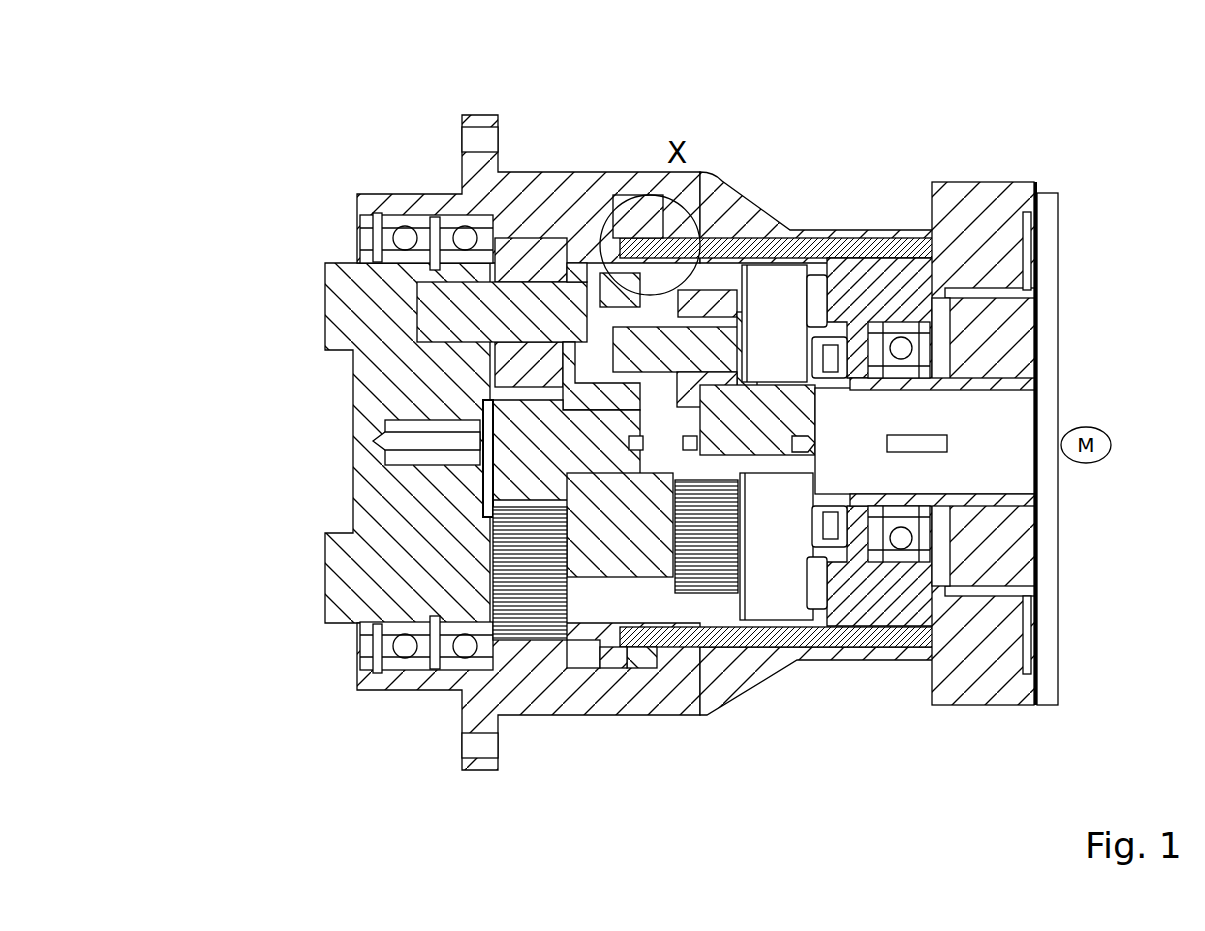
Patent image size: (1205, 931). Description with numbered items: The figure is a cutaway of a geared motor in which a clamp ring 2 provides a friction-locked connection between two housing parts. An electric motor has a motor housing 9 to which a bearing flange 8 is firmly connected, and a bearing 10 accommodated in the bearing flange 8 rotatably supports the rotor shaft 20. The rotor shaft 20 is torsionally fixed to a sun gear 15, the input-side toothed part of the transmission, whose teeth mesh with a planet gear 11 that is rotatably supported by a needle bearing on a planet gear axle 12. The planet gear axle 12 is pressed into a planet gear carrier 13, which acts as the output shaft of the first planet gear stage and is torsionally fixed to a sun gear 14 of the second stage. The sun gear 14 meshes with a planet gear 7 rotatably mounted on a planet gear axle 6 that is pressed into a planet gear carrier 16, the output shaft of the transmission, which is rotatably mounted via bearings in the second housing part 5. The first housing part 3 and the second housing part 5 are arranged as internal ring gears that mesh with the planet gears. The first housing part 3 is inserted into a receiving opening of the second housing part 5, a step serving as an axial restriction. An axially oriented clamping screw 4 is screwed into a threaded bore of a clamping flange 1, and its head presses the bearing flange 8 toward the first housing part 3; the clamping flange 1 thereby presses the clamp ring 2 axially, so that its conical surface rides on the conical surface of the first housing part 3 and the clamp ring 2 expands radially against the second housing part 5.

The clamping flange 1 is at (608, 658).
The clamp ring 2 is at (637, 223).
The first housing part 3 is at (722, 200).
The clamping screw 4 is at (773, 247).
The second housing part 5 is at (574, 194).
The planet gear axle 6 is at (468, 322).
The planet gear 7 is at (530, 255).
The bearing flange 8 is at (871, 284).
The motor housing 9 is at (1002, 212).
The bearing 10 is at (900, 348).
The planet gear 11 is at (710, 302).
The planet gear axle 12 is at (703, 348).
The planet gear carrier 13 is at (608, 390).
The sun gear 14 is at (555, 449).
The sun gear 15 is at (758, 443).
The planet gear carrier 16 is at (395, 553).
The rotor shaft 20 is at (1037, 385).